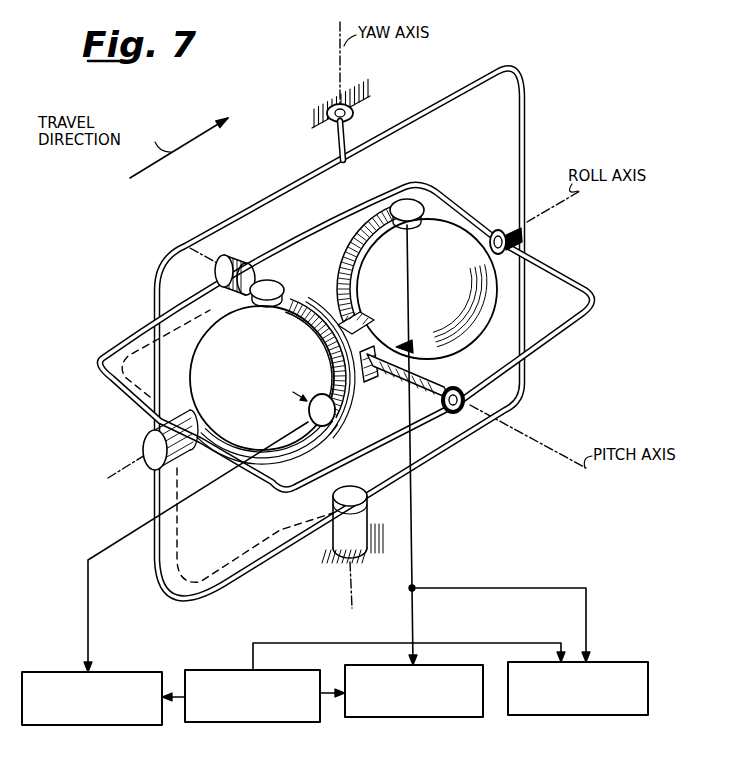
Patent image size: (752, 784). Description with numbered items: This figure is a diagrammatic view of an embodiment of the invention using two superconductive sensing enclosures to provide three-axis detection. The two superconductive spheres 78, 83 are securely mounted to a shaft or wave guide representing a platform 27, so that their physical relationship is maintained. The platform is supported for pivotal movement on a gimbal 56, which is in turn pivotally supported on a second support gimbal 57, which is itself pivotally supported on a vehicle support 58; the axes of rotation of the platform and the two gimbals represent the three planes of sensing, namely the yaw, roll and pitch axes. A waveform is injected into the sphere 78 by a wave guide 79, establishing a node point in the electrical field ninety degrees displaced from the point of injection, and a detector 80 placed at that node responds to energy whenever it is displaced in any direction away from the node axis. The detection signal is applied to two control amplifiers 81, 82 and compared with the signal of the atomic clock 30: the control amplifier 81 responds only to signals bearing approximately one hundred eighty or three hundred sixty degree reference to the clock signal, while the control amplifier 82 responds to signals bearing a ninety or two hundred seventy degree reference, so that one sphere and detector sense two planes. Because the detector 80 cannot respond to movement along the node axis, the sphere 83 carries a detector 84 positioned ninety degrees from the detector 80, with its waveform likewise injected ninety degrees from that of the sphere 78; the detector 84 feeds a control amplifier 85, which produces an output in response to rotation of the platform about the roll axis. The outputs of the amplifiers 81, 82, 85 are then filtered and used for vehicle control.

The platform 27 is at (401, 378).
The atomic clock 30 is at (280, 672).
The gimbal 56 is at (394, 192).
The second support gimbal 57 is at (525, 102).
The vehicle support 58 is at (357, 90).
The sphere 78 is at (340, 256).
The wave guide 79 is at (368, 264).
The detector 80 is at (414, 226).
The control amplifier 81 is at (441, 669).
The control amplifier 82 is at (608, 665).
The sphere 83 is at (197, 361).
The detector 84 is at (306, 413).
The control amplifier 85 is at (113, 673).